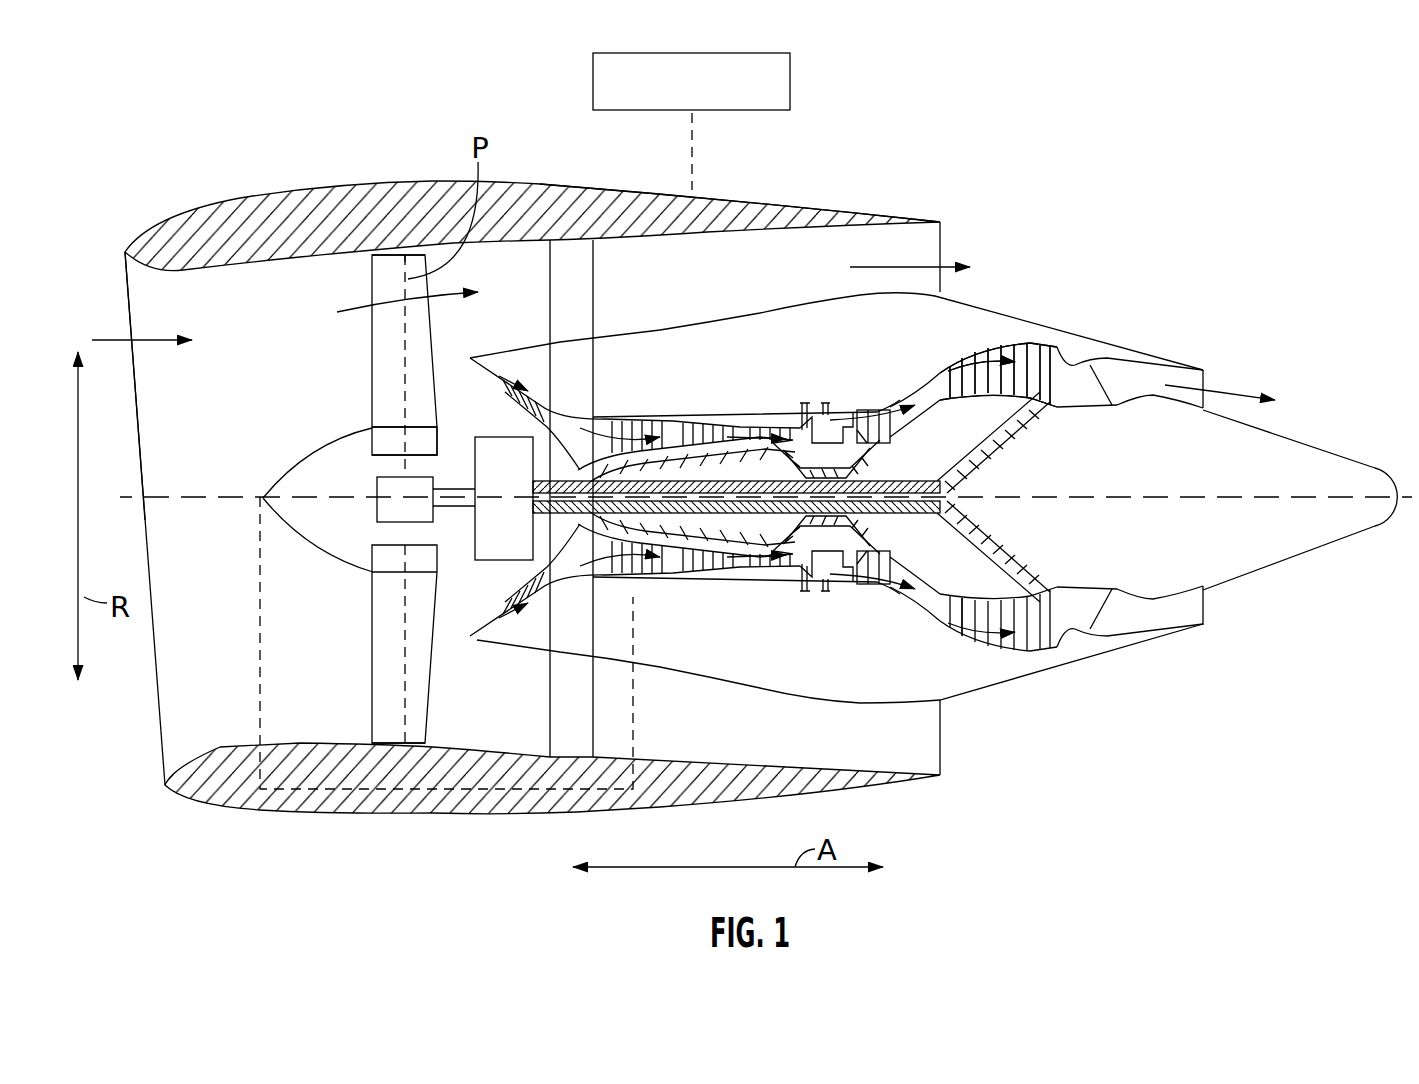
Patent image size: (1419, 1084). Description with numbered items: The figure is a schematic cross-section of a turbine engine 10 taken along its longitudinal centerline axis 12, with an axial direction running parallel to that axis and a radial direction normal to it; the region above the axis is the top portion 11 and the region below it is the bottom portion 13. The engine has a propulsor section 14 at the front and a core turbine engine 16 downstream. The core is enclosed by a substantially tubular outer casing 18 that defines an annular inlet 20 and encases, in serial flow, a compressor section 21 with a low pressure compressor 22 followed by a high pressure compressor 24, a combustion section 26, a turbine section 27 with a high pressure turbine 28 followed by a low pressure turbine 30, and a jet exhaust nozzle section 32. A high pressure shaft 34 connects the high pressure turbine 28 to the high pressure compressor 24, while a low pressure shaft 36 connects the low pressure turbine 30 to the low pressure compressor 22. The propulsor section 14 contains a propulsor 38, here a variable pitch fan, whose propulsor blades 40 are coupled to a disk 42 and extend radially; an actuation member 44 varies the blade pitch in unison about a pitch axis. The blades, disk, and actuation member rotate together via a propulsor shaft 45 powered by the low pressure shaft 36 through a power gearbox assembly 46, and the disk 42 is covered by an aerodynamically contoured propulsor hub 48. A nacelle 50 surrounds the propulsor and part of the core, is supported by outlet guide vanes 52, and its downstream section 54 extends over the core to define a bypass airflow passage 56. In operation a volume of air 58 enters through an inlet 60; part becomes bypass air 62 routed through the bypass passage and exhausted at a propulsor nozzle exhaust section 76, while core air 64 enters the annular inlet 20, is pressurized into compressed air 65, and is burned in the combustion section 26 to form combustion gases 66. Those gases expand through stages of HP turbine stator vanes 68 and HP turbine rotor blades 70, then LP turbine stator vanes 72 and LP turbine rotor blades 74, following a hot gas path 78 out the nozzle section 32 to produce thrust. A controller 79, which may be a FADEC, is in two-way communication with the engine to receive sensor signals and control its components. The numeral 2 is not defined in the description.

The nacelle inlet 2 is at (287, 790).
The turbine engine 10 is at (1124, 179).
The top portion 11 is at (1282, 282).
The longitudinal centerline axis 12 is at (1197, 497).
The bottom portion 13 is at (1229, 755).
The propulsor section 14 is at (343, 273).
The core turbine engine 16 is at (820, 327).
The outer casing 18 is at (773, 686).
The annular inlet 20 is at (487, 623).
The compressor section 21 is at (677, 360).
The low pressure compressor 22 is at (520, 613).
The high pressure compressor 24 is at (623, 562).
The combustion section 26 is at (827, 572).
The turbine section 27 is at (923, 347).
The high pressure turbine 28 is at (899, 581).
The low pressure turbine 30 is at (1030, 662).
The jet exhaust nozzle section 32 is at (1113, 632).
The high pressure shaft 34 is at (800, 467).
The low pressure shaft 36 is at (873, 460).
The propulsor 38 is at (297, 612).
The propulsor blades 40 is at (370, 647).
The disk 42 is at (387, 443).
The actuation member 44 is at (377, 505).
The propulsor shaft 45 is at (443, 487).
The power gearbox assembly 46 is at (490, 440).
The propulsor hub 48 is at (297, 533).
The nacelle 50 is at (390, 813).
The outlet guide vanes 52 is at (593, 307).
The downstream section 54 is at (833, 203).
The bypass airflow passage 56 is at (712, 284).
The volume of air 58 is at (174, 337).
The inlet 60 is at (158, 708).
The bypass air 62 is at (350, 314).
The core air 64 is at (473, 370).
The compressed air 65 is at (653, 423).
The combustion gases 66 is at (873, 413).
The HP turbine stator vanes 68 is at (867, 587).
The HP turbine rotor blades 70 is at (873, 580).
The LP turbine stator vanes 72 is at (947, 620).
The LP turbine rotor blades 74 is at (960, 627).
The propulsor nozzle exhaust section 76 is at (933, 250).
The hot gas path 78 is at (923, 393).
The controller 79 is at (793, 80).